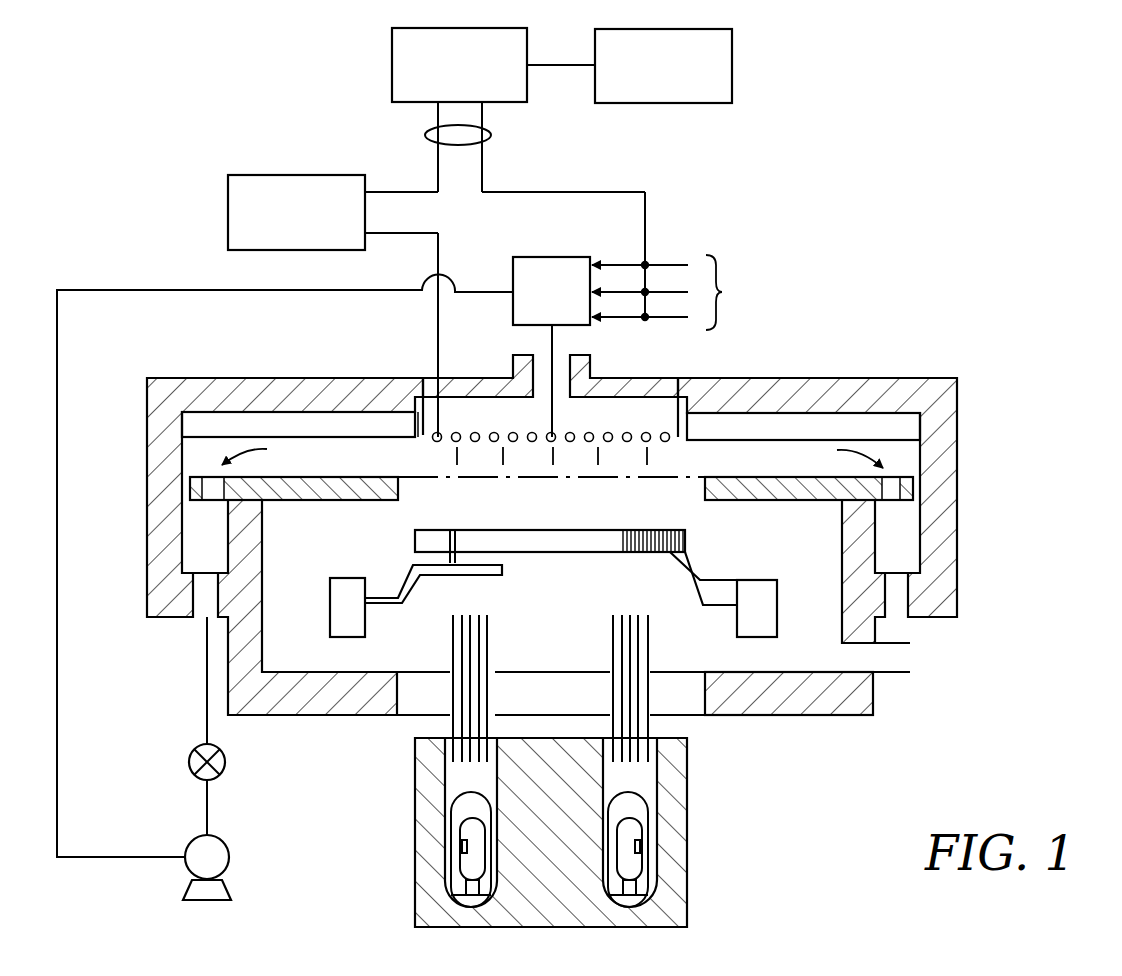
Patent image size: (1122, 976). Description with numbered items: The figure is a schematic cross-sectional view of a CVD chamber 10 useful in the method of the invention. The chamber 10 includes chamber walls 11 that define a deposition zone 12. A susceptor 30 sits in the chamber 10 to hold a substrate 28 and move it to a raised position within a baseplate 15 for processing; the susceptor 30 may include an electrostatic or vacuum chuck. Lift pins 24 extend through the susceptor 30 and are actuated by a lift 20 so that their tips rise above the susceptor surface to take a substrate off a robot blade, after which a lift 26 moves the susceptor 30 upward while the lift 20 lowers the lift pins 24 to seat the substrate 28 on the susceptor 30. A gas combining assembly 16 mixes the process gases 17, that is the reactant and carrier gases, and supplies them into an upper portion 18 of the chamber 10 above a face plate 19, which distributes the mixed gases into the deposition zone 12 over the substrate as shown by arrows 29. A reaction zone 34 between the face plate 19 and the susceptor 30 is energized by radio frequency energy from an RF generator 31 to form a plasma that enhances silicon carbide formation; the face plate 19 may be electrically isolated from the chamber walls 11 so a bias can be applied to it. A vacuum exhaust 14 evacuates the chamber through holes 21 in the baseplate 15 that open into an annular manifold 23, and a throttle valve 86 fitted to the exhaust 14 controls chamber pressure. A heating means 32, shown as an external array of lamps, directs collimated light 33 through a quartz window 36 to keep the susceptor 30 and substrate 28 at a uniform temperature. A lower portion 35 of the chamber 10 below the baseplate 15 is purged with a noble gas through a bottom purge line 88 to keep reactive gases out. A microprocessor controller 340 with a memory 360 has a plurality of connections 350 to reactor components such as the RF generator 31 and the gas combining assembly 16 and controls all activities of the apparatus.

The CVD chamber 10 is at (843, 378).
The chamber walls 11 is at (957, 452).
The deposition zone 12 is at (323, 458).
The vacuum exhaust 14 is at (229, 857).
The baseplate 15 is at (808, 502).
The gas combining assembly 16 is at (570, 257).
The process gases 17 is at (625, 261).
The upper portion 18 is at (598, 413).
The face plate 19 is at (473, 430).
The lift 20 is at (430, 573).
The holes 21 is at (205, 490).
The annular manifold 23 is at (207, 545).
The lift pins 24 is at (480, 557).
The lift 26 is at (688, 587).
The substrate 28 is at (610, 480).
The arrows 29 is at (597, 463).
The susceptor 30 is at (550, 524).
The RF generator 31 is at (228, 213).
The heating means 32 is at (413, 810).
The collimated light 33 is at (613, 637).
The reaction zone 34 is at (508, 470).
The lower portion 35 is at (320, 553).
The quartz window 36 is at (673, 683).
The throttle valve 86 is at (225, 762).
The bottom purge line 88 is at (905, 655).
The microprocessor controller 340 is at (392, 63).
The connections 350 is at (425, 135).
The memory 360 is at (732, 65).